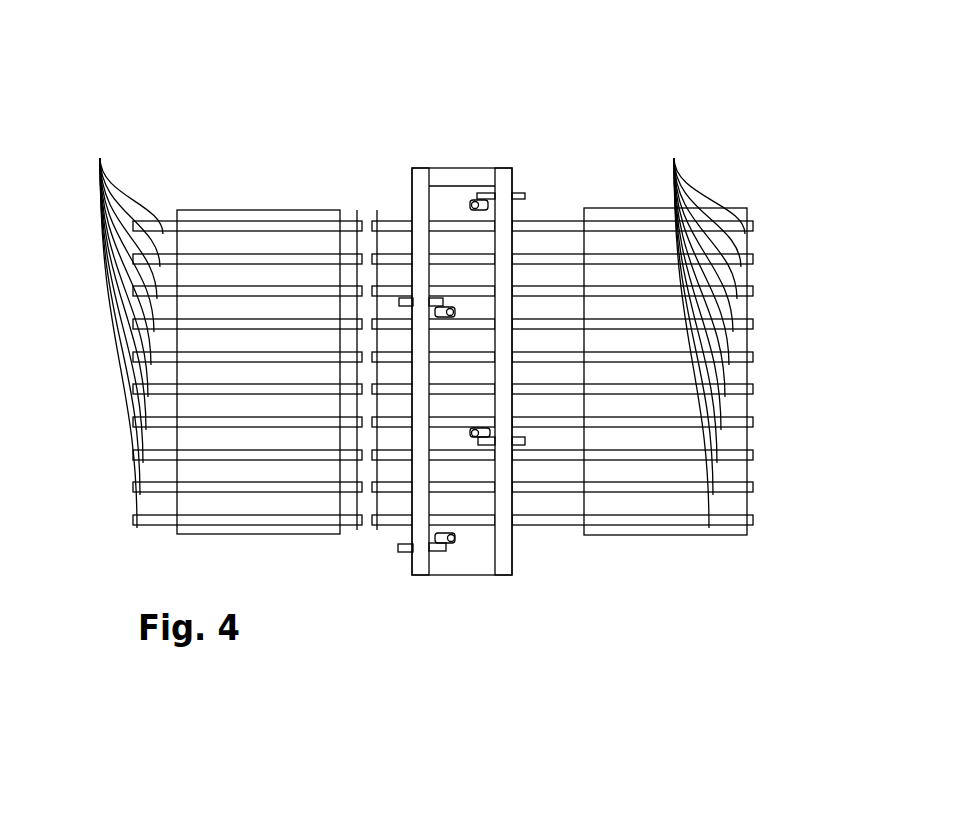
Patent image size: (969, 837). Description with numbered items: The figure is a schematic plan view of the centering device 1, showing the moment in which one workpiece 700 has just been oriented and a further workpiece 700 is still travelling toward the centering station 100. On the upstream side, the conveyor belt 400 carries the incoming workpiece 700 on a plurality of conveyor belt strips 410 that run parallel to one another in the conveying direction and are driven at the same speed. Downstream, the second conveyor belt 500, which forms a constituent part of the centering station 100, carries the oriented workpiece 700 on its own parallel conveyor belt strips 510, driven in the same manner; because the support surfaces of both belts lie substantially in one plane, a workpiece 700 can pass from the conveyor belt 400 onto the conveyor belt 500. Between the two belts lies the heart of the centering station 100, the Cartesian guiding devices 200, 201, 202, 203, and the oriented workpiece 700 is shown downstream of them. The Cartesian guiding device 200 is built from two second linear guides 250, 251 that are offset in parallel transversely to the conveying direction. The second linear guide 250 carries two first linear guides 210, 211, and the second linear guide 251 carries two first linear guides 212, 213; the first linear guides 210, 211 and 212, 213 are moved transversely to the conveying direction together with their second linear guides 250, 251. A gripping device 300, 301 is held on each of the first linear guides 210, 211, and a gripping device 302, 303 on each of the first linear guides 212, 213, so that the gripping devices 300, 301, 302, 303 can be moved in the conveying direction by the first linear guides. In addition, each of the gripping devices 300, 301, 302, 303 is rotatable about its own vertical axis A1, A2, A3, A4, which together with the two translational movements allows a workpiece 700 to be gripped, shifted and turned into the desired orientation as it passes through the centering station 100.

The centering device 1 is at (115, 113).
The centering station 100 is at (372, 182).
The Cartesian guiding device 200 is at (390, 550).
The Cartesian guiding device 201 is at (386, 272).
The Cartesian guiding device 202 is at (535, 466).
The Cartesian guiding device 203 is at (545, 194).
The first linear guide 210 is at (403, 552).
The first linear guide 211 is at (405, 298).
The first linear guide 212 is at (515, 445).
The first linear guide 213 is at (523, 194).
The second linear guide 250 is at (420, 570).
The second linear guide 251 is at (503, 180).
The gripping device 300 is at (444, 548).
The gripping device 301 is at (450, 310).
The gripping device 302 is at (480, 442).
The gripping device 303 is at (478, 198).
The conveyor belt 400 is at (238, 192).
The conveyor belt strips 410 is at (121, 330).
The second conveyor belt 500 is at (764, 203).
The conveyor belt strips 510 is at (700, 330).
The workpiece 700 is at (265, 210).
The vertical axis A1 is at (451, 540).
The vertical axis A2 is at (476, 437).
The vertical axis A3 is at (450, 310).
The vertical axis A4 is at (477, 203).